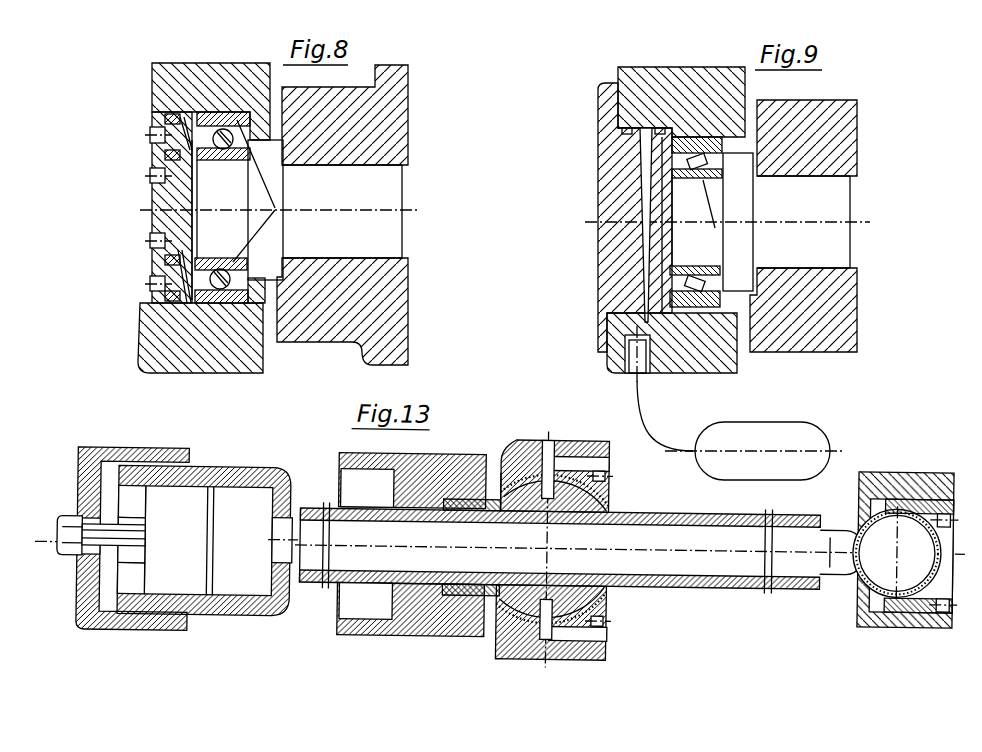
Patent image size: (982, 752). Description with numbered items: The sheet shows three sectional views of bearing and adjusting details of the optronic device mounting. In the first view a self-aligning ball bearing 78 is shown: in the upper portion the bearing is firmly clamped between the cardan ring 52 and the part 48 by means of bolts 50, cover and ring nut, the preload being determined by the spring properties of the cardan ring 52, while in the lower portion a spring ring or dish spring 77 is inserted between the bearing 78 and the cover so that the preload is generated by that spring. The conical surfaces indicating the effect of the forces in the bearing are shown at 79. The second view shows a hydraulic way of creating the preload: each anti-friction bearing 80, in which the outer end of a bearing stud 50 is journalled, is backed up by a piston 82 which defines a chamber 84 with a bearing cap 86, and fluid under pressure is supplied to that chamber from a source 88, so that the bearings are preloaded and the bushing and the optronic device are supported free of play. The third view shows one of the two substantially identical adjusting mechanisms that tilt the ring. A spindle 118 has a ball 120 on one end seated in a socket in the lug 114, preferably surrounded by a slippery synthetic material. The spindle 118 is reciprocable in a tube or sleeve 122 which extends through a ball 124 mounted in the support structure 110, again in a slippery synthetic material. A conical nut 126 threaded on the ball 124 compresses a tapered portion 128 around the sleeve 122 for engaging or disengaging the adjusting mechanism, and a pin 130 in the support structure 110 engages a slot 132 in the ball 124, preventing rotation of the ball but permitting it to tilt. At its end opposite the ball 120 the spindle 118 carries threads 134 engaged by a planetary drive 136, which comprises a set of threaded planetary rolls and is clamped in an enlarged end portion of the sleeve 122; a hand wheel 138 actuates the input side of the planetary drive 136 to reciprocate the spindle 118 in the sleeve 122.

In FIG. 8, the part 48 is at (395, 292).
In FIG. 9, the part 48 is at (835, 318).
In FIG. 8, the bolts 50 is at (388, 188).
In FIG. 9, the bolts 50 is at (838, 207).
In FIG. 8, the cardan ring 52 is at (150, 345).
In FIG. 9, the cardan ring 52 is at (635, 82).
In FIG. 8, the spring washer 77 is at (178, 262).
In FIG. 8, the self-aligning ball bearing 78 is at (152, 112).
In FIG. 8, the conical surfaces 79 is at (262, 226).
In FIG. 9, the conical surfaces 79 is at (715, 228).
In FIG. 9, the anti-friction bearing 80 is at (703, 292).
In FIG. 9, the piston 82 is at (652, 160).
In FIG. 9, the chamber 84 is at (637, 288).
In FIG. 9, the bearing cap 86 is at (613, 213).
In FIG. 9, the source 88 is at (785, 430).
In FIG. 13, the support structure 110 is at (498, 653).
In FIG. 13, the lug 114 is at (888, 482).
In FIG. 13, the spindle 118 is at (683, 561).
In FIG. 13, the ball 120 is at (882, 582).
In FIG. 13, the tube 122 is at (752, 573).
In FIG. 13, the ball 124 is at (608, 605).
In FIG. 13, the conical nut 126 is at (443, 632).
In FIG. 13, the tapered portion 128 is at (425, 585).
In FIG. 13, the pin 130 is at (547, 445).
In FIG. 13, the slot 132 is at (510, 483).
In FIG. 13, the threads 134 is at (280, 557).
In FIG. 13, the planetary drive 136 is at (218, 587).
In FIG. 13, the hand wheel 138 is at (150, 632).